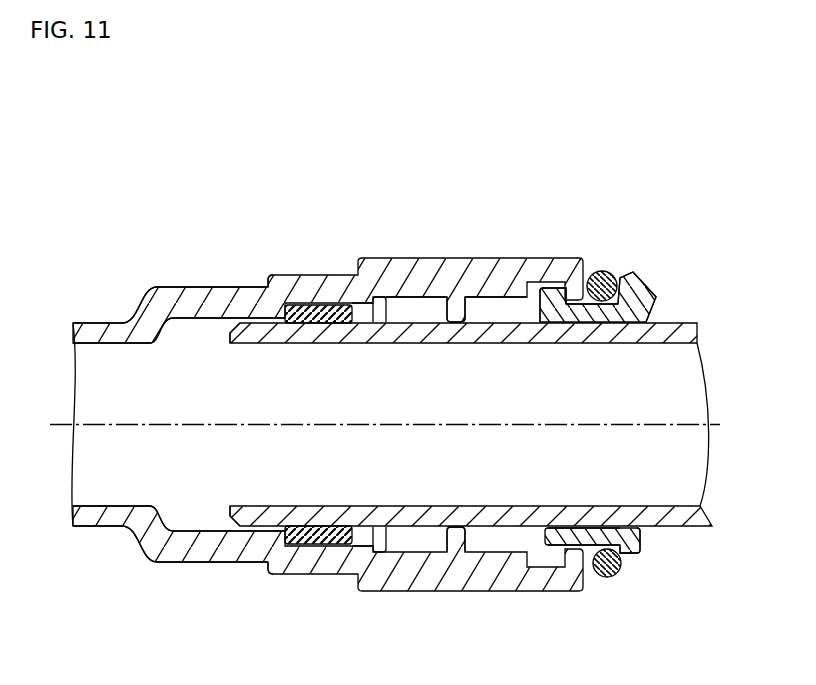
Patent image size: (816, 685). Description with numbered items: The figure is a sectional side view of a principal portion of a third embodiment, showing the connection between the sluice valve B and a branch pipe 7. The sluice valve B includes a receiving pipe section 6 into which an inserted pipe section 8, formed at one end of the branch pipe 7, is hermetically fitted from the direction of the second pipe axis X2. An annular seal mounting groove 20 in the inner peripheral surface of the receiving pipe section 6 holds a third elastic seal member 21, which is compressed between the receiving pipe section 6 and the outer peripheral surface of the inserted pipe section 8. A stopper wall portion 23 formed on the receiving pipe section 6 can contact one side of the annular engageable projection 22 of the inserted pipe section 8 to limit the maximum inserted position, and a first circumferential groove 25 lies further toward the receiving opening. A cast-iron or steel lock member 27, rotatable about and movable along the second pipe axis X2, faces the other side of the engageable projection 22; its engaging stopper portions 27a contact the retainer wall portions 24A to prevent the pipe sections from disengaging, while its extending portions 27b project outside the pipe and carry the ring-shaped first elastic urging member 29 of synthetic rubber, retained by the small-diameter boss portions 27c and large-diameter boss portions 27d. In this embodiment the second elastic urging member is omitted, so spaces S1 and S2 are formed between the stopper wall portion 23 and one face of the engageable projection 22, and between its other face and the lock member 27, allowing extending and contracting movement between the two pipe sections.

The sluice valve B is at (107, 316).
The receiving pipe section 6 is at (320, 273).
The branch pipe 7 is at (684, 519).
The inserted pipe section 8 is at (253, 338).
The seal mounting groove 20 is at (316, 324).
The third elastic seal member 21 is at (290, 305).
The engageable projection 22 is at (455, 305).
The stopper wall portion 23 is at (360, 314).
The retainer wall portion 24A is at (583, 324).
The first circumferential groove 25 is at (377, 302).
The lock member 27 is at (550, 326).
The engaging stopper portion 27a is at (555, 292).
The extending portion 27b is at (568, 541).
The small-diameter boss portion 27c is at (630, 553).
The large-diameter boss portion 27d is at (650, 284).
The first elastic urging member 29 is at (596, 272).
The space S1 is at (408, 312).
The space S2 is at (492, 310).
The second pipe axis X2 is at (674, 424).